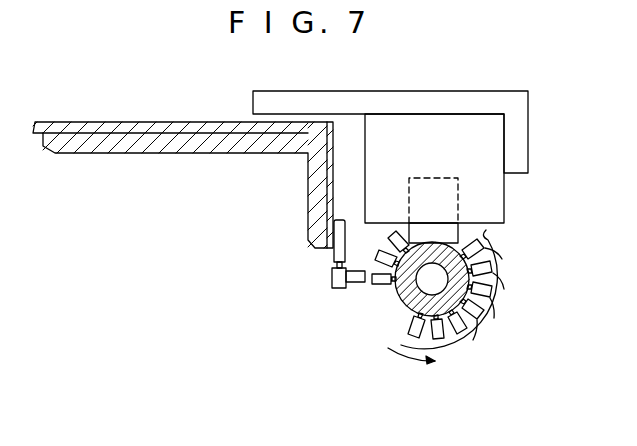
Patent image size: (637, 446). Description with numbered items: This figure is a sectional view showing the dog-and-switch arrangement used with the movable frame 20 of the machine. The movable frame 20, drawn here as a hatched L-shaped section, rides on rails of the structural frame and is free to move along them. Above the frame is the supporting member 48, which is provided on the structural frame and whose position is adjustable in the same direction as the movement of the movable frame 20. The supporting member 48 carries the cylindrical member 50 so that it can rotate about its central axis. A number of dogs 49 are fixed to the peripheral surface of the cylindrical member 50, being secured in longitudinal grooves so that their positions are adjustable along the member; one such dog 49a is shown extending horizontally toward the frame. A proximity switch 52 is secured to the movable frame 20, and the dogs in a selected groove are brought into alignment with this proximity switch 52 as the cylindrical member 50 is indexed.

The movable frame 20 is at (117, 122).
The supporting member 48 is at (409, 102).
The dogs 49 is at (495, 316).
The dog 49a is at (380, 285).
The cylindrical member 50 is at (398, 317).
The proximity switch 52 is at (356, 284).